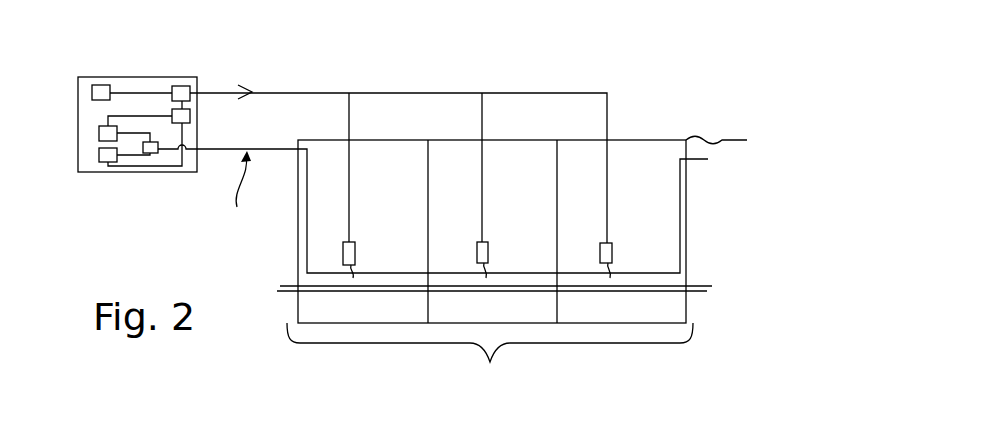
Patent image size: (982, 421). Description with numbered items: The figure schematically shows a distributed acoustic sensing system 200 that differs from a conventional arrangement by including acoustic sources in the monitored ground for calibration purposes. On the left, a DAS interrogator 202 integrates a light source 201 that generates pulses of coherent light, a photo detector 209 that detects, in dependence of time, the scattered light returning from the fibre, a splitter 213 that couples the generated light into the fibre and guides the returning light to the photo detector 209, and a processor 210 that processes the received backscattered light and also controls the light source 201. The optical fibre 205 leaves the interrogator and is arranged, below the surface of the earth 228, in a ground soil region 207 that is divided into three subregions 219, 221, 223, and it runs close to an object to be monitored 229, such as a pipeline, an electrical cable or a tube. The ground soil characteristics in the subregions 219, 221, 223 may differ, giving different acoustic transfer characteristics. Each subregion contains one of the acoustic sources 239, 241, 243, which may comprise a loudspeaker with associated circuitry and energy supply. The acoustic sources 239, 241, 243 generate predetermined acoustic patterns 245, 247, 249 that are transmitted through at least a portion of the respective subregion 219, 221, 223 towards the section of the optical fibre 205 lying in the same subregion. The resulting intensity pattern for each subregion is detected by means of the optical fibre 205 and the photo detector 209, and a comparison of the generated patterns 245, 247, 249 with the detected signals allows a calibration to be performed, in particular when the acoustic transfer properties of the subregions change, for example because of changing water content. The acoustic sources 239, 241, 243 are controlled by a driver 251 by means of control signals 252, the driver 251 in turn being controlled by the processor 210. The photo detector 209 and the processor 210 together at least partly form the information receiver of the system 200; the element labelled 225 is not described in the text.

The distributed acoustic sensing system 200 is at (685, 88).
The light source 201 is at (104, 162).
The DAS interrogator 202 is at (78, 145).
The optical fibre 205 is at (305, 253).
The ground soil region 207 is at (490, 358).
The photo detector 209 is at (99, 131).
The processor 210 is at (190, 117).
The splitter 213 is at (152, 153).
The subregion 219 is at (405, 190).
The subregion 221 is at (535, 190).
The subregion 223 is at (663, 190).
The processor 225 is at (102, 85).
The surface of the earth 228 is at (707, 140).
The object to be monitored 229 is at (698, 293).
The acoustic source 239 is at (347, 281).
The acoustic source 241 is at (480, 283).
The acoustic source 243 is at (603, 280).
The predetermined acoustic pattern 245 is at (352, 290).
The predetermined acoustic pattern 247 is at (488, 290).
The predetermined acoustic pattern 249 is at (610, 290).
The driver 251 is at (180, 86).
The control signals 252 is at (251, 92).